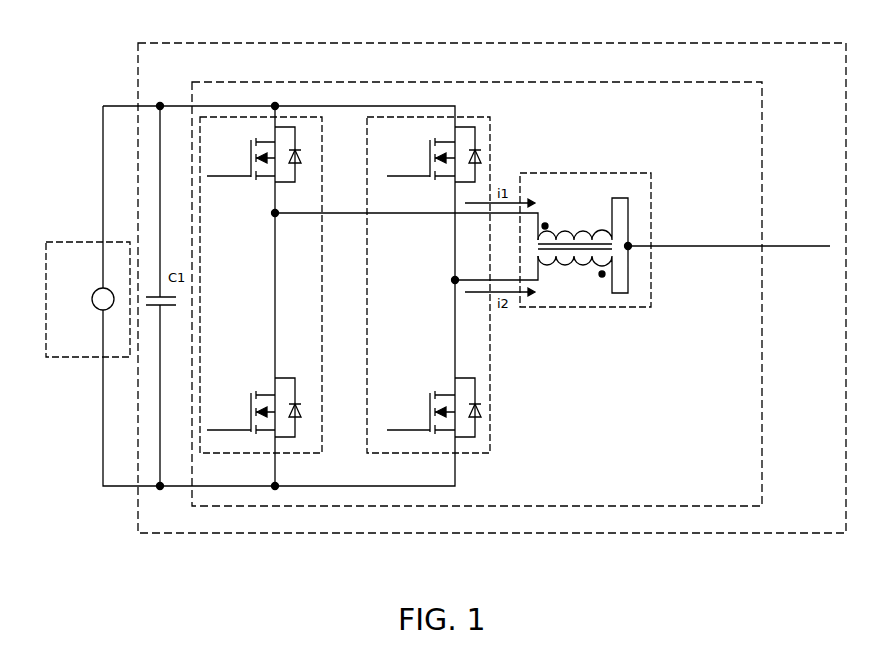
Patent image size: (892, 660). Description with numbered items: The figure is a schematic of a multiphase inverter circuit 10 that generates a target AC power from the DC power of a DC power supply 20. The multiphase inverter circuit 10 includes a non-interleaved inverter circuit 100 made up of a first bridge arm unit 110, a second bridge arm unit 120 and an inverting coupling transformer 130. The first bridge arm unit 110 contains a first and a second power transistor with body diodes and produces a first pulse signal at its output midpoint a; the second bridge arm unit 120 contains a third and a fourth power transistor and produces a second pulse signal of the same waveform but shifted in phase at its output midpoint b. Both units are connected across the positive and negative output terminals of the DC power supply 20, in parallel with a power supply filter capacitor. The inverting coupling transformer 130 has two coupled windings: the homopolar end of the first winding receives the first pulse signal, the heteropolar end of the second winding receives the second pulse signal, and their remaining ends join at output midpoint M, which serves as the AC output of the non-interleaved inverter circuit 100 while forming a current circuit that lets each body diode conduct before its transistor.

The multiphase inverter circuit 10 is at (710, 43).
The DC power supply 20 is at (70, 242).
The non-interleaved inverter circuit 100 is at (707, 82).
The first bridge arm unit 110 is at (300, 117).
The second bridge arm unit 120 is at (470, 117).
The inverting coupling transformer 130 is at (622, 173).